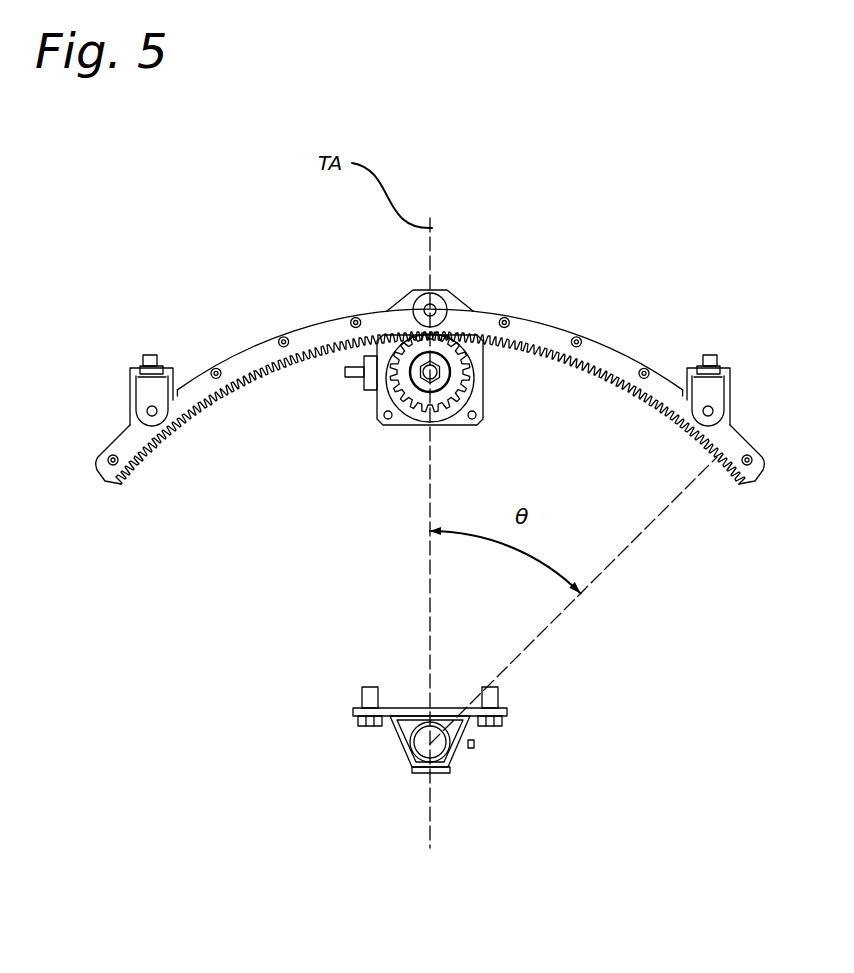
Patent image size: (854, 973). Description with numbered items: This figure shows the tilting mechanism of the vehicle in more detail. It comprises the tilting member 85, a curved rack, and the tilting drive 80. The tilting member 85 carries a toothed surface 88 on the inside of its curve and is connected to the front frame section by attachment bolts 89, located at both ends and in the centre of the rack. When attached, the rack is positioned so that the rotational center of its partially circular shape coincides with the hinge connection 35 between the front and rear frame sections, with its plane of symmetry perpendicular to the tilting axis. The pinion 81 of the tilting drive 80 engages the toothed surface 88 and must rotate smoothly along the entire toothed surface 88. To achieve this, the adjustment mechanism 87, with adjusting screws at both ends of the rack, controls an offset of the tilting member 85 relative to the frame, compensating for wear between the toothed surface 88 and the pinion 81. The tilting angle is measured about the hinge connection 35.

The hinge connection 35 is at (457, 768).
The tilting drive 80 is at (370, 408).
The pinion 81 is at (456, 378).
The tilting member 85 is at (612, 348).
The adjustment mechanism 87 is at (150, 366).
The toothed surface 88 is at (234, 390).
The attachment bolts 89 is at (152, 411).